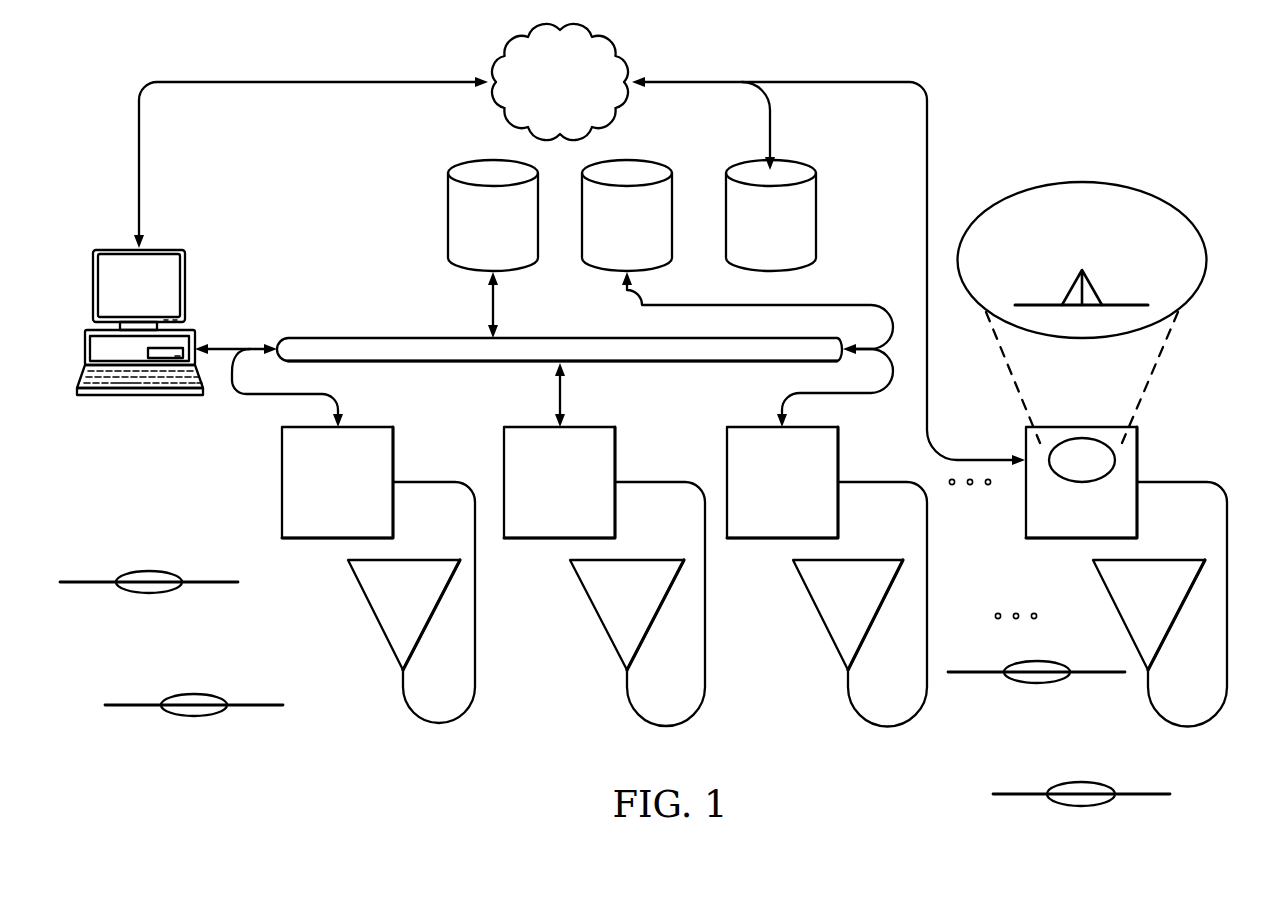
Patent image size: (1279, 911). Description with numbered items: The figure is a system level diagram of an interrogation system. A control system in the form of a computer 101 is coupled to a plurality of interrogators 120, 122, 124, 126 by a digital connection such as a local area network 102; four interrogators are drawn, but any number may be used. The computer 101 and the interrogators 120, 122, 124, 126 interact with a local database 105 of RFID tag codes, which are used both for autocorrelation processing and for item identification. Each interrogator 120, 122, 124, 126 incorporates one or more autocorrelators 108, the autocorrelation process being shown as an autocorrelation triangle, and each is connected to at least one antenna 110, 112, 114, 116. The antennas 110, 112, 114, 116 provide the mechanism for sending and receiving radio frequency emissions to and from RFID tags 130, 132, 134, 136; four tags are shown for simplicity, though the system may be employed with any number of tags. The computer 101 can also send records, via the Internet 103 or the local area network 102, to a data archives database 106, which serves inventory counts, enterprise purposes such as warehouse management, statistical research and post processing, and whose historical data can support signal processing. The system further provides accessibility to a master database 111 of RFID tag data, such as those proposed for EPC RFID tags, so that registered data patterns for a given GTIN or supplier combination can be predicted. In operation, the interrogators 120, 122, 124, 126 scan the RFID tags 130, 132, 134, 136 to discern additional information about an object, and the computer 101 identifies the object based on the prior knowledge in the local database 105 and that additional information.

The computer 101 is at (93, 290).
The local area network 102 is at (404, 338).
The Internet 103 is at (539, 98).
The local database 105 is at (472, 238).
The data archives database 106 is at (606, 238).
The autocorrelator 108 is at (1207, 258).
The antenna 110 is at (382, 605).
The master database 111 is at (750, 238).
The antenna 112 is at (606, 605).
The antenna 114 is at (827, 605).
The antenna 116 is at (1127, 605).
The interrogator 120 is at (317, 500).
The interrogator 122 is at (539, 500).
The interrogator 124 is at (761, 500).
The interrogator 126 is at (1061, 520).
The RFID tag 130 is at (105, 619).
The RFID tag 132 is at (150, 741).
The RFID tag 134 is at (1081, 708).
The RFID tag 136 is at (1125, 829).